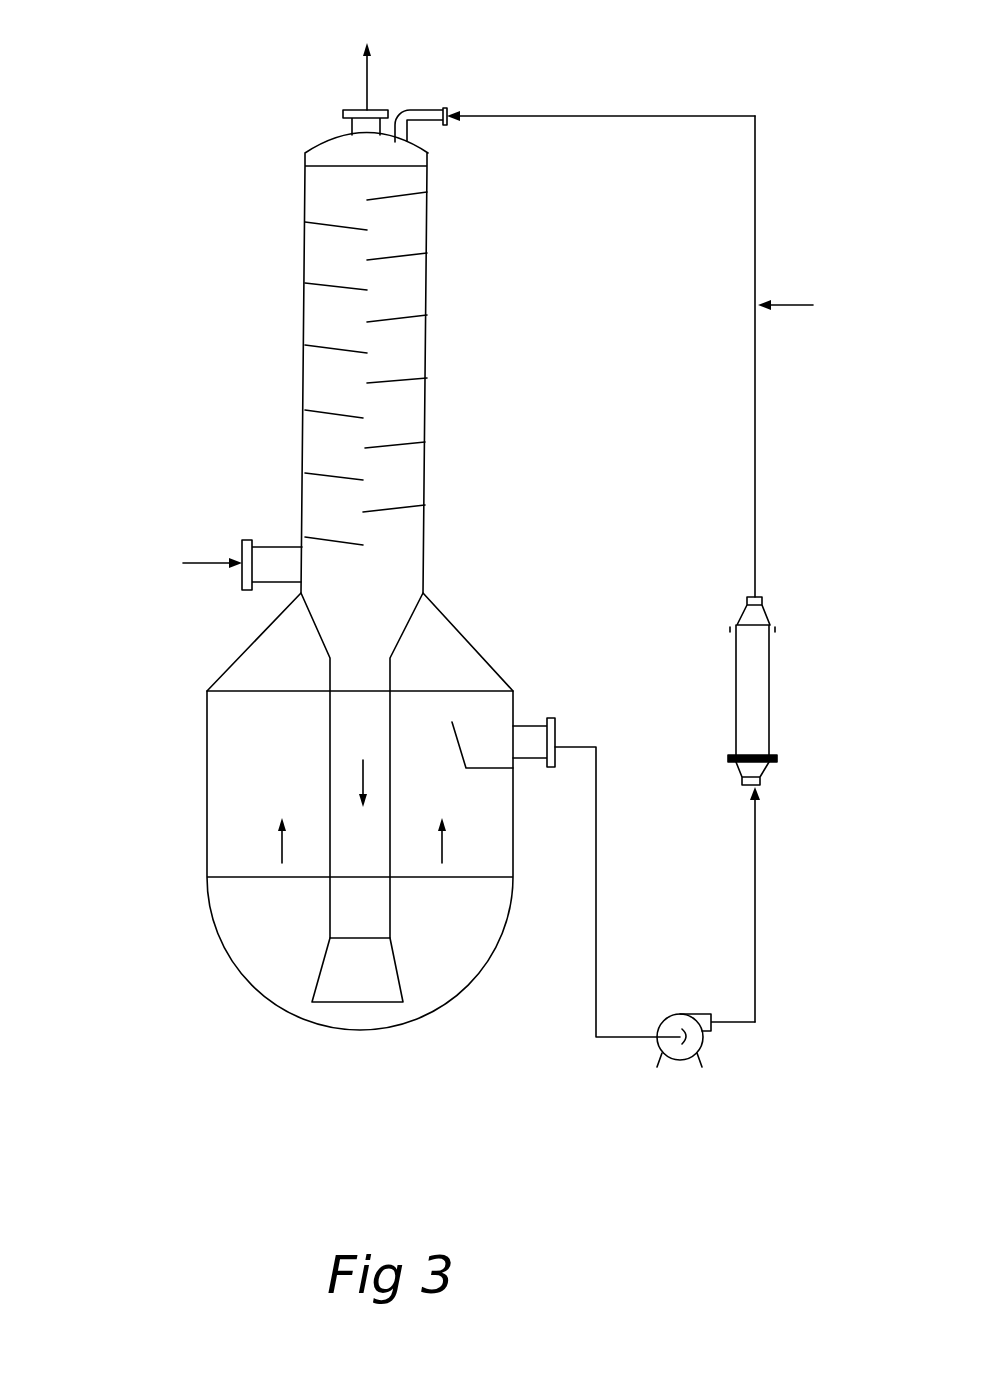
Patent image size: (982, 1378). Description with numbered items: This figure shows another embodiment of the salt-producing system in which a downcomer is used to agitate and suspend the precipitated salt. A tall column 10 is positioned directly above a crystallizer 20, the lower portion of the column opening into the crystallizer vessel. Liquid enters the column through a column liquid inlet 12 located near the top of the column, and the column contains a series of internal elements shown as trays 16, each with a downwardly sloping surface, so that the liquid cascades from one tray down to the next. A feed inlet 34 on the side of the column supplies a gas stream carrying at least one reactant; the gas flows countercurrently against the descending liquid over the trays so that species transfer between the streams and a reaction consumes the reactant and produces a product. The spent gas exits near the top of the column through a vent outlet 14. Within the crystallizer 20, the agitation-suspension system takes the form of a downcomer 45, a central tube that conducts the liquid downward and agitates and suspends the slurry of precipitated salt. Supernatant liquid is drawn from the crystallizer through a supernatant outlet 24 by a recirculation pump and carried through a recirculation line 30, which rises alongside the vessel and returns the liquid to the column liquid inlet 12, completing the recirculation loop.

The column 10 is at (240, 303).
The column liquid inlet 12 is at (435, 110).
The vent outlet 14 is at (383, 110).
The trays 16 is at (328, 348).
The crystallizer 20 is at (163, 785).
The supernatant outlet 24 is at (532, 725).
The recirculation line 30 is at (757, 418).
The feed inlet 34 is at (257, 547).
The downcomer 45 is at (327, 895).